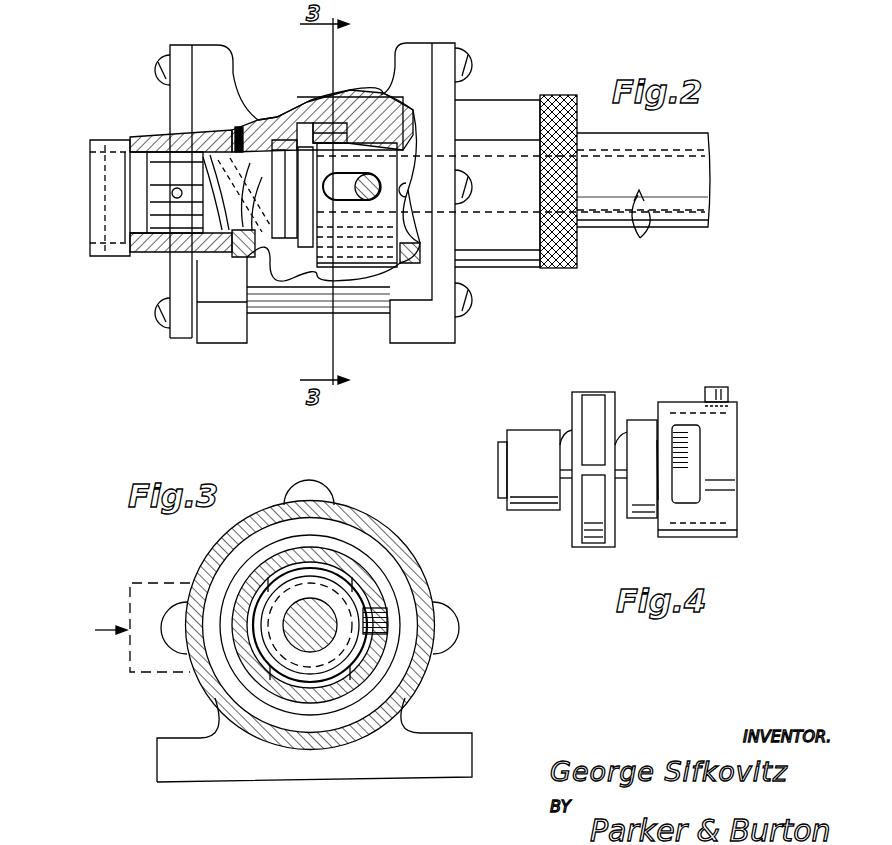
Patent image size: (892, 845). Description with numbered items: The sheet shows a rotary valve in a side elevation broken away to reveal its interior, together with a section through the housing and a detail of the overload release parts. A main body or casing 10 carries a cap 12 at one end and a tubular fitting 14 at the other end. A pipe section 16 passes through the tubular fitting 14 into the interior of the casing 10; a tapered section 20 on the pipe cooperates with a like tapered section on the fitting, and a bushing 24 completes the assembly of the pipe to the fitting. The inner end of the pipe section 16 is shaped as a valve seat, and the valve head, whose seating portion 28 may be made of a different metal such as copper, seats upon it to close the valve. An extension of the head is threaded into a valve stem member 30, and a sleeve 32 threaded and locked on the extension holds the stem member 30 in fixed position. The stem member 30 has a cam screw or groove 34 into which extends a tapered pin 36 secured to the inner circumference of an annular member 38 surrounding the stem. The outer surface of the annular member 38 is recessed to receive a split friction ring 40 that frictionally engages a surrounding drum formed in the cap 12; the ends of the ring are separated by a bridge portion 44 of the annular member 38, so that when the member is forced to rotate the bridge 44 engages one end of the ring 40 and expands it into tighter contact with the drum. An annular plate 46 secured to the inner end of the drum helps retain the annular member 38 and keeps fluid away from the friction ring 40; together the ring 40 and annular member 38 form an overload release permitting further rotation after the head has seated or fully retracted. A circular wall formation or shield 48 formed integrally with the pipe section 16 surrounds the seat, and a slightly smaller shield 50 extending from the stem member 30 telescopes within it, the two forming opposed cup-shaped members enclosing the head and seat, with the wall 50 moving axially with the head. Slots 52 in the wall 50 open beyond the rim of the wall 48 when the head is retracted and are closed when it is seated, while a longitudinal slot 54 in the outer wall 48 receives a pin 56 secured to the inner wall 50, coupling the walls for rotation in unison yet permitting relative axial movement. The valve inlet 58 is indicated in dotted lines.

In FIG. 2, the main body or casing 10 is at (410, 300).
In FIG. 3, the main body or casing 10 is at (212, 704).
In FIG. 2, the cap 12 is at (130, 138).
In FIG. 2, the tubular fitting 14 is at (528, 100).
In FIG. 2, the pipe section 16 is at (696, 186).
In FIG. 2, the tapered section 20 is at (410, 230).
In FIG. 2, the bushing / valve seat 24 is at (578, 257).
In FIG. 2, the seating portion 28 is at (420, 250).
In FIG. 2, the valve stem member 30 is at (290, 243).
In FIG. 3, the valve stem member 30 is at (300, 653).
In FIG. 4, the valve stem member 30 is at (642, 420).
In FIG. 2, the sleeve 32 is at (162, 165).
In FIG. 4, the sleeve 32 is at (545, 503).
In FIG. 2, the cam screw or groove 34 is at (205, 180).
In FIG. 2, the tapered pin 36 is at (222, 130).
In FIG. 2, the annular member 38 is at (196, 133).
In FIG. 4, the annular member 38 is at (572, 405).
In FIG. 4, the split friction ring 40 is at (597, 545).
In FIG. 4, the bridge portion 44 is at (594, 468).
In FIG. 2, the annular plate 46 is at (245, 257).
In FIG. 2, the circular wall formation or shield 48 is at (355, 266).
In FIG. 3, the circular wall formation or shield 48 is at (326, 548).
In FIG. 2, the circular wall formation or shield 50 is at (360, 113).
In FIG. 3, the circular wall formation or shield 50 is at (352, 590).
In FIG. 4, the circular wall formation or shield 50 is at (725, 433).
In FIG. 2, the slots 52 is at (327, 140).
In FIG. 3, the slots 52 is at (338, 570).
In FIG. 4, the slots 52 is at (690, 481).
In FIG. 2, the longitudinal slot 54 is at (332, 203).
In FIG. 2, the pin 56 is at (383, 173).
In FIG. 3, the pin 56 is at (387, 610).
In FIG. 4, the pin 56 is at (728, 393).
In FIG. 2, the inlet 58 is at (243, 128).
In FIG. 3, the inlet 58 is at (157, 677).